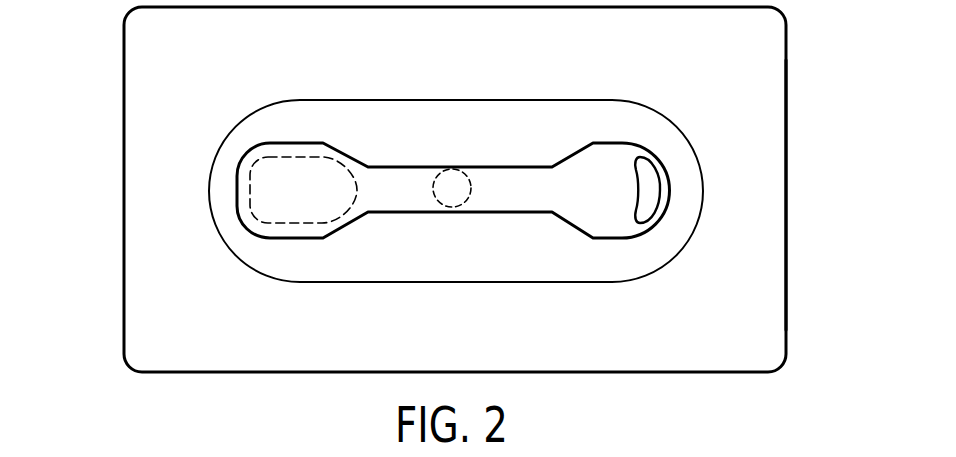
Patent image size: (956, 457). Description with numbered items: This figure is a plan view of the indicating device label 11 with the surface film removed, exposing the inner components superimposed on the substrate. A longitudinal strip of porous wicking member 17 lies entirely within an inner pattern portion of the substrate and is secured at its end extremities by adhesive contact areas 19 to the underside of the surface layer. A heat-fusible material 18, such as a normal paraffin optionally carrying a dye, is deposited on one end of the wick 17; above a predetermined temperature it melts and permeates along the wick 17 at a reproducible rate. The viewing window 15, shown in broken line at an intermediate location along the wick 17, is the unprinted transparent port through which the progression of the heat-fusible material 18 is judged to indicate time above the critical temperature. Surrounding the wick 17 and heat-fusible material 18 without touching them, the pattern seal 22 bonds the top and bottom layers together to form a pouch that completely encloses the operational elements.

The label 11 is at (94, 82).
The viewing window 15 is at (452, 169).
The wicking member 17 is at (550, 187).
The heat-fusible material 18 is at (297, 172).
The adhesive contact areas 19 is at (654, 191).
The pattern seal 22 is at (752, 114).